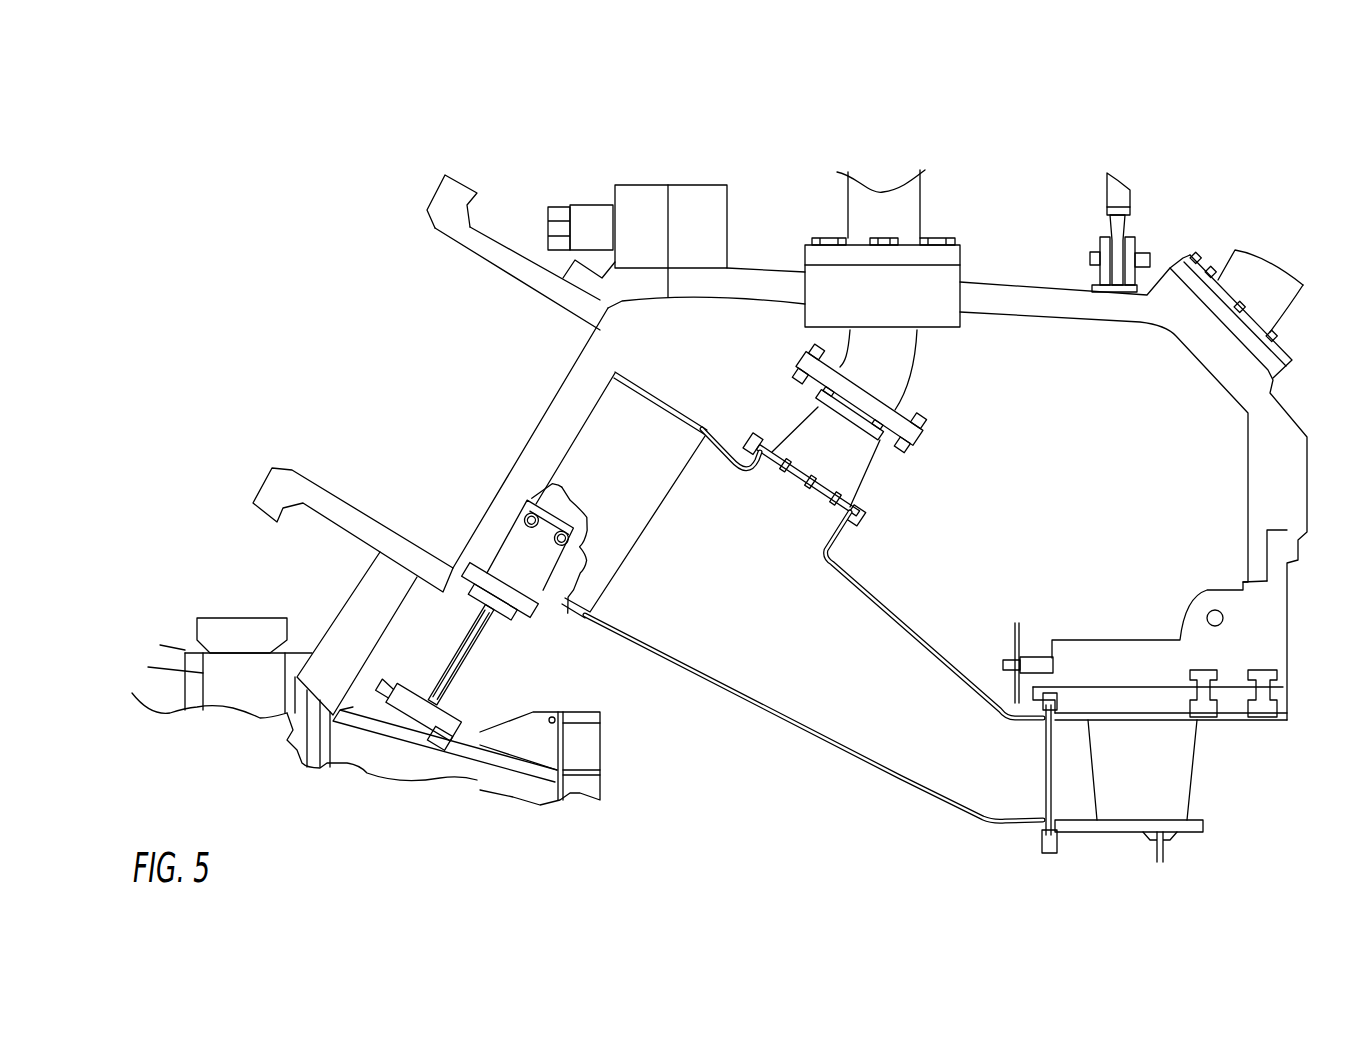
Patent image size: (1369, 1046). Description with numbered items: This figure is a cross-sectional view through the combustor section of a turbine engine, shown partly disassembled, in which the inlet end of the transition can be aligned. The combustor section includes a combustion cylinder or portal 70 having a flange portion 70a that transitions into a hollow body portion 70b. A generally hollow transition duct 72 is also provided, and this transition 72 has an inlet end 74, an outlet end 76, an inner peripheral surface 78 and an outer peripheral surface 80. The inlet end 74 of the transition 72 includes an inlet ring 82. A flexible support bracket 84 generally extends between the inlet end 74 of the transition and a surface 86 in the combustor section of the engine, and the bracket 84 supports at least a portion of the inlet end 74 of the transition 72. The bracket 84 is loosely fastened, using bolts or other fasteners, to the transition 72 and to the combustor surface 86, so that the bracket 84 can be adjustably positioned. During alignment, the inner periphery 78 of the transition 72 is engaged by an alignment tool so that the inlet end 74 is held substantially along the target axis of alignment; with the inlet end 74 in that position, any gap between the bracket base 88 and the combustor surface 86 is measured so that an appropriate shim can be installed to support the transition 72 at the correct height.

The combustion cylinder or portal 70 is at (247, 505).
The flange portion 70a is at (433, 193).
The hollow body portion 70b is at (490, 230).
The transition duct 72 is at (720, 703).
The inlet end 74 is at (632, 372).
The outlet end 76 is at (1027, 827).
The inner peripheral surface 78 is at (855, 762).
The outer peripheral surface 80 is at (940, 812).
The inlet ring 82 is at (553, 587).
The flexible support bracket 84 is at (477, 665).
The surface 86 is at (417, 745).
The bracket base 88 is at (397, 720).